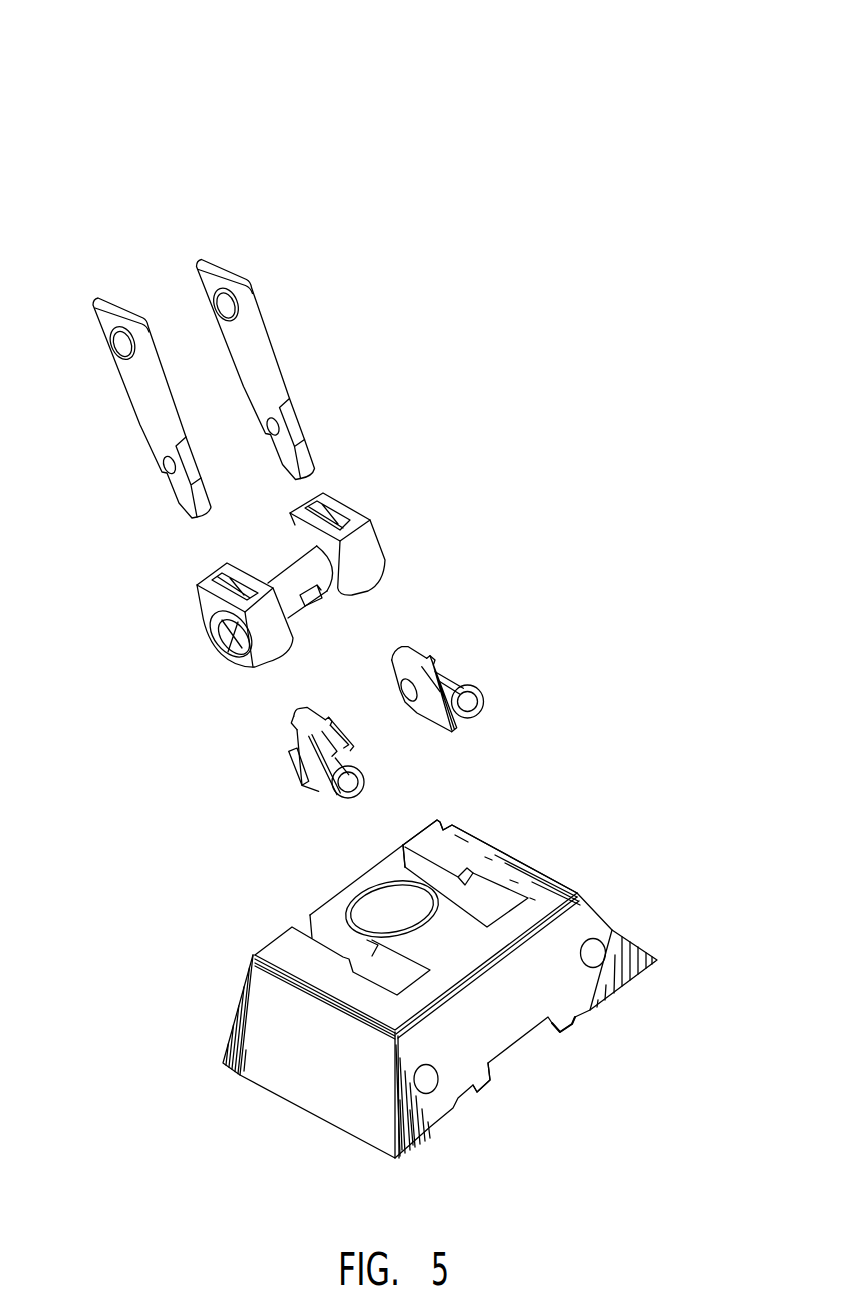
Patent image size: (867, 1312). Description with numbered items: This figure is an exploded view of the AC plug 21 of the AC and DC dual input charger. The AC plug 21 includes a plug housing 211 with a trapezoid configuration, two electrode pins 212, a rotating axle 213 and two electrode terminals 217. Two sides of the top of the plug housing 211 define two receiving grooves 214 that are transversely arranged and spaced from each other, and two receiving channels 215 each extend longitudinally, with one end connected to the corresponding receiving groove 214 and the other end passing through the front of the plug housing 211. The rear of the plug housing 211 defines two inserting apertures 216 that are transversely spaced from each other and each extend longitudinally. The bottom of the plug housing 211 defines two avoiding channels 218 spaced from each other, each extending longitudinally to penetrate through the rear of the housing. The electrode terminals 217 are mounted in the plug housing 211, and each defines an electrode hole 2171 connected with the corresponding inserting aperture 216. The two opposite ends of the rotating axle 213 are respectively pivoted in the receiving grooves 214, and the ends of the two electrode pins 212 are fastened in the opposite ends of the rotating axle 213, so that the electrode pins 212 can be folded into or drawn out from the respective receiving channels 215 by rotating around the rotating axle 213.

The AC plug 21 is at (52, 44).
The plug housing 211 is at (320, 1080).
The electrode pins 212 is at (170, 285).
The rotating axle 213 is at (357, 557).
The receiving grooves 214 is at (492, 895).
The receiving channels 215 is at (415, 858).
The inserting apertures 216 is at (582, 956).
The electrode terminals 217 is at (437, 677).
The electrode hole 2171 is at (333, 803).
The avoiding channels 218 is at (587, 1010).